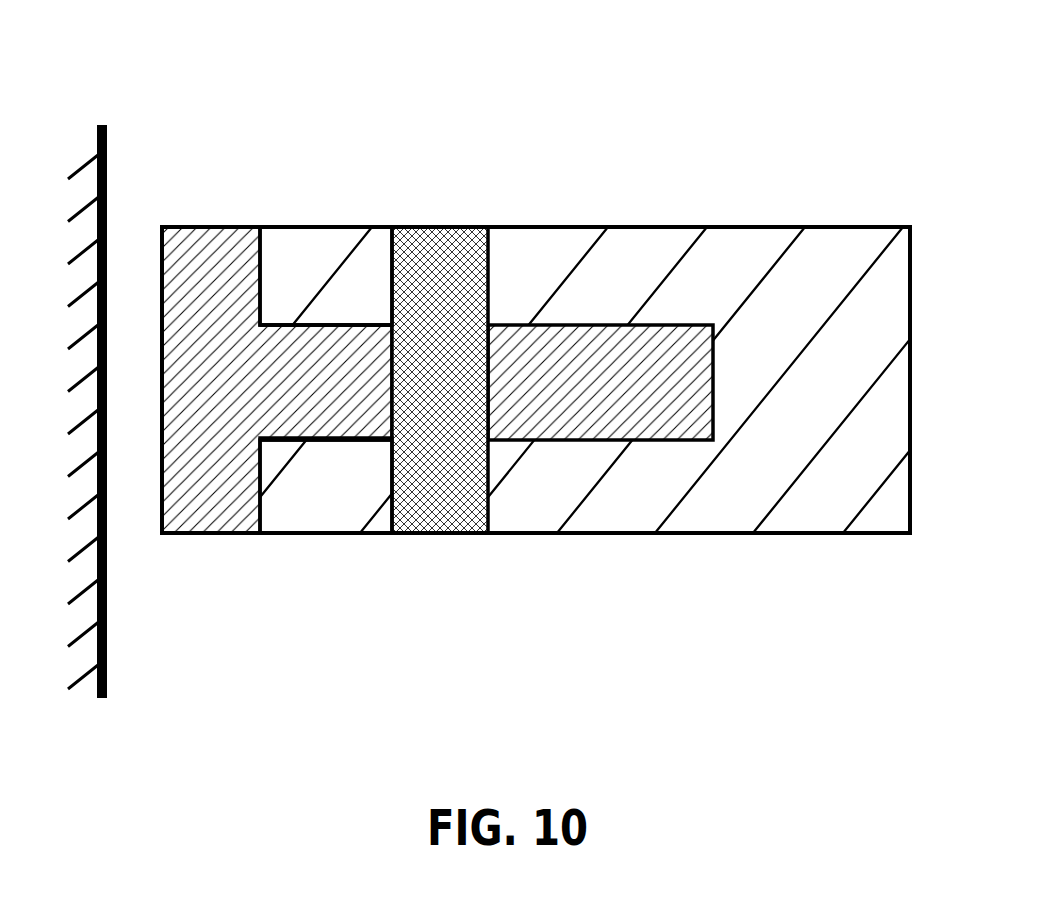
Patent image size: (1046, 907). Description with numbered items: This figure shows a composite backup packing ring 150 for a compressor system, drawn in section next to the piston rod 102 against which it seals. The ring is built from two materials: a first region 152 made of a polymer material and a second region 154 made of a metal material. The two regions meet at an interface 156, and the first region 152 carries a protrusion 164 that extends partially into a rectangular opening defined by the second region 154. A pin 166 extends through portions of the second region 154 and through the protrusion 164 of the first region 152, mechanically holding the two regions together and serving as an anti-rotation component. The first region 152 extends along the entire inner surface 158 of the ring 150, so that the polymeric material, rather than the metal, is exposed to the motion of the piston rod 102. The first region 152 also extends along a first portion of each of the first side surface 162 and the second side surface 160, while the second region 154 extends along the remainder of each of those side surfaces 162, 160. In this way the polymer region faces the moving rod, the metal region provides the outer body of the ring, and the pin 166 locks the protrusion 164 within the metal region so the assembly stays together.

The piston rod 102 is at (95, 434).
The composite backup packing ring 150 is at (757, 117).
The first region 152 is at (223, 255).
The second region 154 is at (828, 306).
The interface 156 is at (347, 438).
The inner surface 158 is at (163, 448).
The second side surface 160 is at (418, 522).
The first side surface 162 is at (290, 227).
The protrusion 164 is at (330, 348).
The pin 166 is at (445, 227).